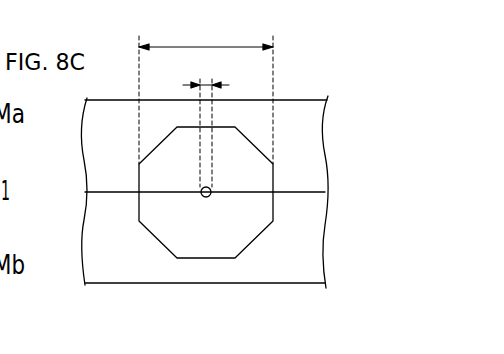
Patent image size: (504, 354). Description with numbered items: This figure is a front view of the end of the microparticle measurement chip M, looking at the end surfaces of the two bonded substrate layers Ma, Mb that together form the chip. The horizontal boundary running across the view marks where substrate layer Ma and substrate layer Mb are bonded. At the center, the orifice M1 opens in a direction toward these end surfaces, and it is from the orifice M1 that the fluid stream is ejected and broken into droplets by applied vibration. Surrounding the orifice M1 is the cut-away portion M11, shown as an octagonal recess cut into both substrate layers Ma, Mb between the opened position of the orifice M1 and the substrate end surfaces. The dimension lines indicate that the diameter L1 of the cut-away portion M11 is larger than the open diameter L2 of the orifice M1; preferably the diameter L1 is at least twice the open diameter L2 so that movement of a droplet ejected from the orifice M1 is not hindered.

The microparticle measurement chip M is at (312, 84).
The substrate layer Ma is at (315, 148).
The substrate layer Mb is at (315, 245).
The orifice M1 is at (206, 198).
The cut-away portion M11 is at (207, 259).
The diameter of the cut-away portion L1 is at (206, 91).
The open diameter of the orifice L2 is at (206, 118).